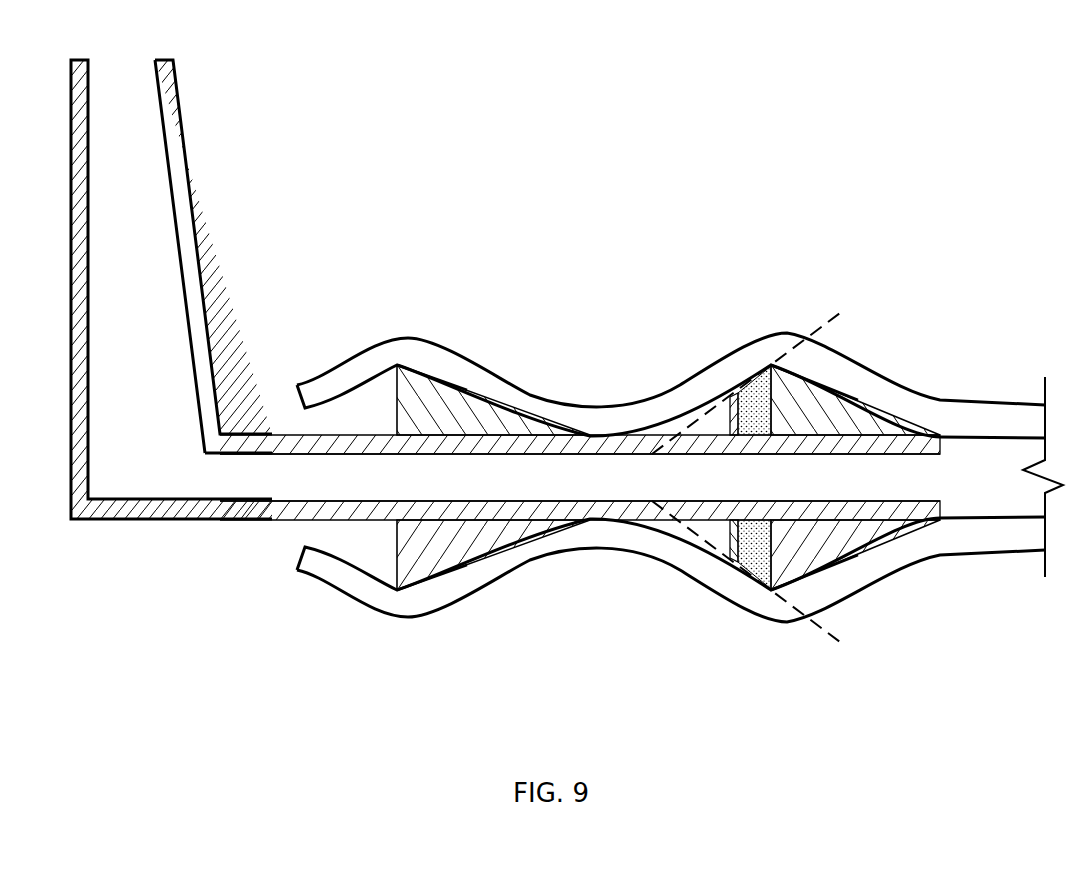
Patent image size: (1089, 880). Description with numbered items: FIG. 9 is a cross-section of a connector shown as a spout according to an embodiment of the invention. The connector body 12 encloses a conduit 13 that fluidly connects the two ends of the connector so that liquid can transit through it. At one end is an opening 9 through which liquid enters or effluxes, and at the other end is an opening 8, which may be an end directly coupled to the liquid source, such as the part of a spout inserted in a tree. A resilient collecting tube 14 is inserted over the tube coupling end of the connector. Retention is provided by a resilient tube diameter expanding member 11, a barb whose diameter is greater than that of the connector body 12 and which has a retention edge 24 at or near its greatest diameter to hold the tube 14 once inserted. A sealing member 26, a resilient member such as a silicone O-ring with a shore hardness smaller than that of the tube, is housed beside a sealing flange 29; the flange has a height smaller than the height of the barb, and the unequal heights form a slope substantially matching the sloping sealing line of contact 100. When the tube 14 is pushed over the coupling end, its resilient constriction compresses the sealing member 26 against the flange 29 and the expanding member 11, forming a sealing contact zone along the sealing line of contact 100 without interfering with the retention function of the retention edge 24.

The opening 8 is at (122, 60).
The opening 9 is at (933, 475).
The resilient tube diameter expanding member 11 is at (434, 400).
The connector body 12 is at (263, 505).
The conduit 13 is at (223, 482).
The resilient collecting tube 14 is at (588, 412).
The retention edge 24 is at (391, 362).
The sealing member 26 is at (753, 378).
The sealing flange 29 is at (733, 395).
The sealing line of contact 100 is at (836, 316).